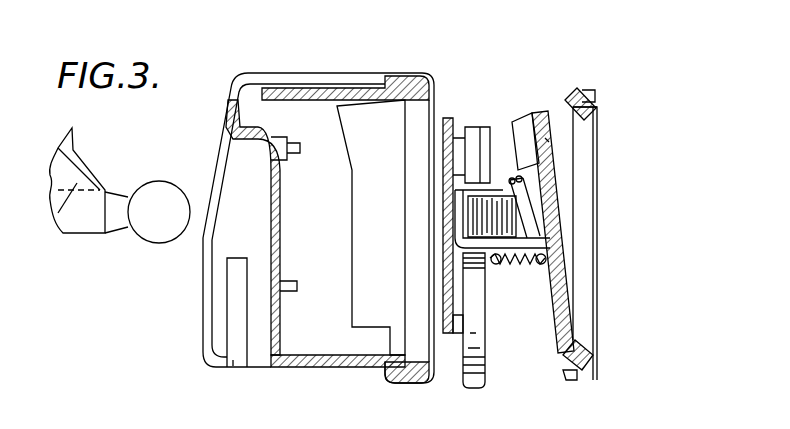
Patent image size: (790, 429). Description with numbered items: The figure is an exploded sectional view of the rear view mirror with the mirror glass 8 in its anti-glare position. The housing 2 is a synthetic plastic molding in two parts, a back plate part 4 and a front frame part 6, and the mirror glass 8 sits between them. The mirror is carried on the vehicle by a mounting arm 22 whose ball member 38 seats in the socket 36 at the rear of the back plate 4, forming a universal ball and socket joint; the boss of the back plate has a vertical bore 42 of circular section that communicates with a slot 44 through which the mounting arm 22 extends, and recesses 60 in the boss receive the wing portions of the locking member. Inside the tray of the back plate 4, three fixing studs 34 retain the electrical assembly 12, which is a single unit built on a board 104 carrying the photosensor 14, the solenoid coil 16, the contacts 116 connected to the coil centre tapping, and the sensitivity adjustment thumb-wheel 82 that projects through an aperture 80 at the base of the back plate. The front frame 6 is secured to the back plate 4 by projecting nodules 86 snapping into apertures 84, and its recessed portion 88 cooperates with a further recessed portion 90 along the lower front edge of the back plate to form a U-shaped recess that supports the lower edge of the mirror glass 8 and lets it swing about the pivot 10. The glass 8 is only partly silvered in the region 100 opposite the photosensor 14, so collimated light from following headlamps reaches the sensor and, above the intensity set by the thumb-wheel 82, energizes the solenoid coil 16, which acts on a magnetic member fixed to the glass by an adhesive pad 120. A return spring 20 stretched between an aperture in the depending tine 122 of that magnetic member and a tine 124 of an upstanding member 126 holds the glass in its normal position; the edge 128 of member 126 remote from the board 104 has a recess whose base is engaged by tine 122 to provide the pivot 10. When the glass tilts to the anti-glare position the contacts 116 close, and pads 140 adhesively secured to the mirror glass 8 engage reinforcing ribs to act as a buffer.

The housing 2 is at (196, 108).
The back plate part 4 is at (223, 128).
The front frame part 6 is at (580, 96).
The mirror glass 8 is at (574, 307).
The pivot 10 is at (540, 238).
The electrical assembly 12 is at (468, 118).
The photosensor 14 is at (485, 127).
The solenoid coil 16 is at (540, 177).
The return spring 20 is at (557, 288).
The mounting arm 22 is at (70, 180).
The fixing studs 34 is at (300, 150).
The socket 36 is at (257, 344).
The ball member 38 is at (160, 234).
The vertical bore 42 is at (248, 168).
The slot 44 is at (218, 172).
The recesses 60 is at (233, 360).
The aperture 80 is at (315, 362).
The sensitivity adjustment thumb-wheel 82 is at (475, 388).
The apertures 84 is at (407, 104).
The projecting nodules 86 is at (574, 88).
The recessed portion 88 is at (556, 117).
The further recessed portion 90 is at (387, 345).
The partly silvered region 100 is at (551, 139).
The board 104 is at (449, 118).
The contacts 116 is at (508, 178).
The adhesive pad 120 is at (482, 206).
The depending tine 122 is at (546, 270).
The tine 124 is at (512, 268).
The upstanding member 126 is at (478, 250).
The edge 128 is at (547, 255).
The pads 140 is at (540, 80).